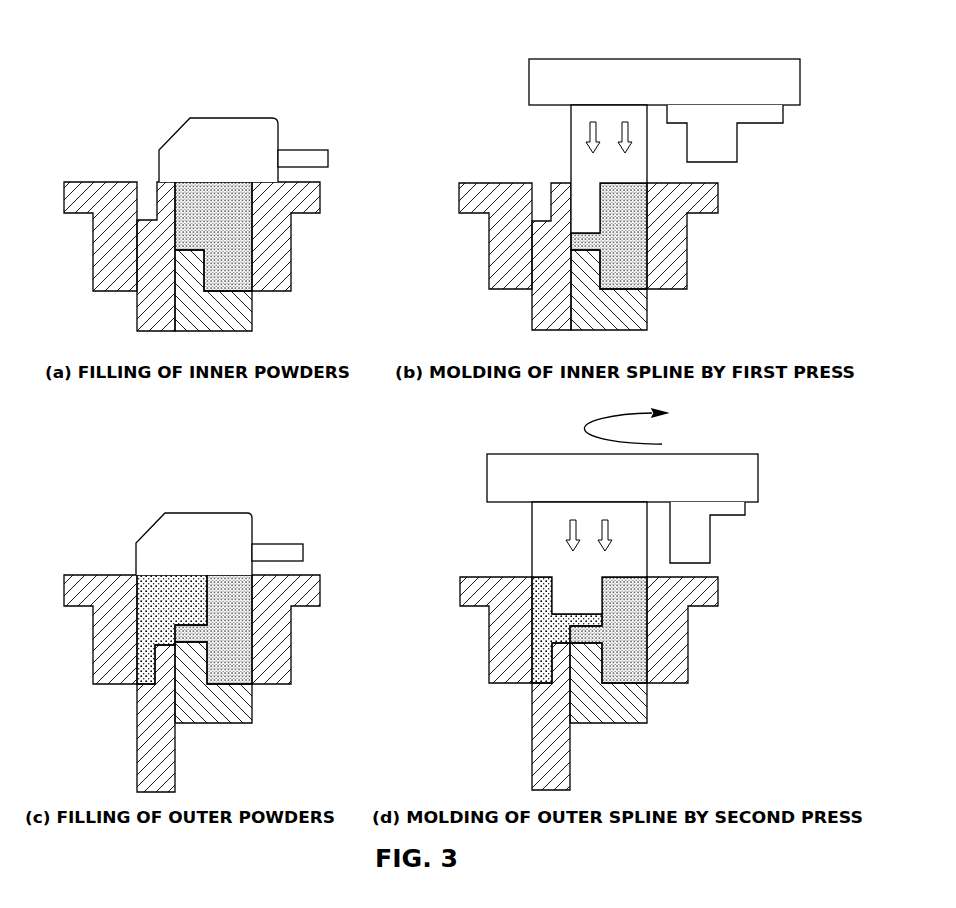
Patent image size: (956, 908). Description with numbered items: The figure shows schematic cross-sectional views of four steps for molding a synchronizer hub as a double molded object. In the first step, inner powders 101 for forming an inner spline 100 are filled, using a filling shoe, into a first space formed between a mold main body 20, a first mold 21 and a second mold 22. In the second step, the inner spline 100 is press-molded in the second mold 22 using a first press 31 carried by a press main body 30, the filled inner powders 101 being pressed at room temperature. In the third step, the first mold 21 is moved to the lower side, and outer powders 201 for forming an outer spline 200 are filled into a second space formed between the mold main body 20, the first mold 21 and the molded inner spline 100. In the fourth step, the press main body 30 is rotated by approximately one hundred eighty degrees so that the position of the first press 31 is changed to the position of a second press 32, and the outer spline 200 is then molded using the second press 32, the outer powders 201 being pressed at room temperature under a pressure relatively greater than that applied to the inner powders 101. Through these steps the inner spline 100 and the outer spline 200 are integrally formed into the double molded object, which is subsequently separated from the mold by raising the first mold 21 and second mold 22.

The mold main body 20 is at (100, 183).
The first mold 21 is at (140, 312).
The second mold 22 is at (248, 310).
The press main body 30 is at (537, 82).
The first press 31 is at (585, 153).
The second press 32 is at (740, 138).
The inner spline 100 is at (637, 260).
The inner powders 101 is at (228, 125).
The outer spline 200 is at (548, 630).
The outer powders 201 is at (202, 520).